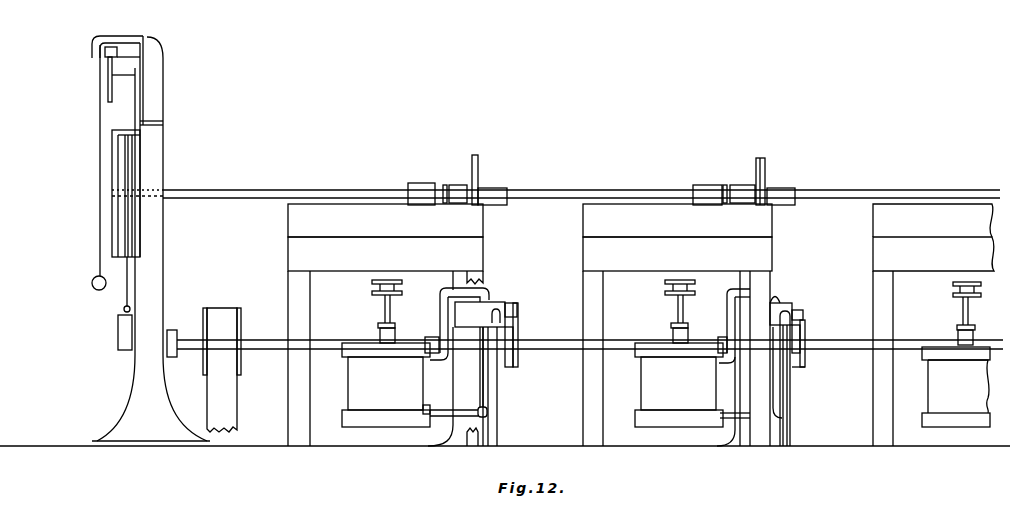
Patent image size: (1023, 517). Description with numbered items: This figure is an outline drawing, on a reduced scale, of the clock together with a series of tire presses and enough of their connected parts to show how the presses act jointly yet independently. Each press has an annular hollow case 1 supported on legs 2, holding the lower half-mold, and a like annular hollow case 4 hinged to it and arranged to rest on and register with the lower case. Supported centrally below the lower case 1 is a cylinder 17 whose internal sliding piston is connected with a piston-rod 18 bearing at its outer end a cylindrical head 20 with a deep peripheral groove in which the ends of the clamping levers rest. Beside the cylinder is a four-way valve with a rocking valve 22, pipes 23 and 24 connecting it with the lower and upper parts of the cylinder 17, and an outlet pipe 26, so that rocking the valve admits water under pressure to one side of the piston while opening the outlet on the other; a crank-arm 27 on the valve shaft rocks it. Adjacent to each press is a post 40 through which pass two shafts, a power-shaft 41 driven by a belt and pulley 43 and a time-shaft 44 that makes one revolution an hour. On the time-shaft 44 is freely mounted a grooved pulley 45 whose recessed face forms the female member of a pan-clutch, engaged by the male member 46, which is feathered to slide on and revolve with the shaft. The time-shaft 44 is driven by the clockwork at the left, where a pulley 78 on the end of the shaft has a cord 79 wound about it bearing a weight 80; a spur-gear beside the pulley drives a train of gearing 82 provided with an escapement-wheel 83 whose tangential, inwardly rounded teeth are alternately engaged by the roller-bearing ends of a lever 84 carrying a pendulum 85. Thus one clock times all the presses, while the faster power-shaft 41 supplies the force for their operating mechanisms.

The annular hollow case 1 is at (632, 254).
The legs 2 is at (286, 379).
The upper annular hollow case 4 is at (630, 220).
The cylinder 17 is at (349, 385).
The piston-rod 18 is at (667, 320).
The cylindrical head 20 is at (371, 288).
The rocking valve 22 is at (634, 311).
The pipe 23 is at (602, 372).
The pipe 24 is at (581, 367).
The outlet pipe 26 is at (645, 373).
The crank-arm 27 is at (512, 326).
The post 40 is at (565, 186).
The power-shaft 41 is at (585, 339).
The pulley 43 is at (222, 362).
The time-shaft 44 is at (581, 185).
The grooved pulley 45 is at (633, 177).
The male clutch member 46 is at (599, 184).
The pulley 78 is at (112, 164).
The cord 79 is at (120, 301).
The weight 80 is at (109, 303).
The train of gearing 82 is at (147, 98).
The escapement-wheel 83 is at (108, 91).
The lever 84 is at (128, 50).
The pendulum 85 is at (112, 195).